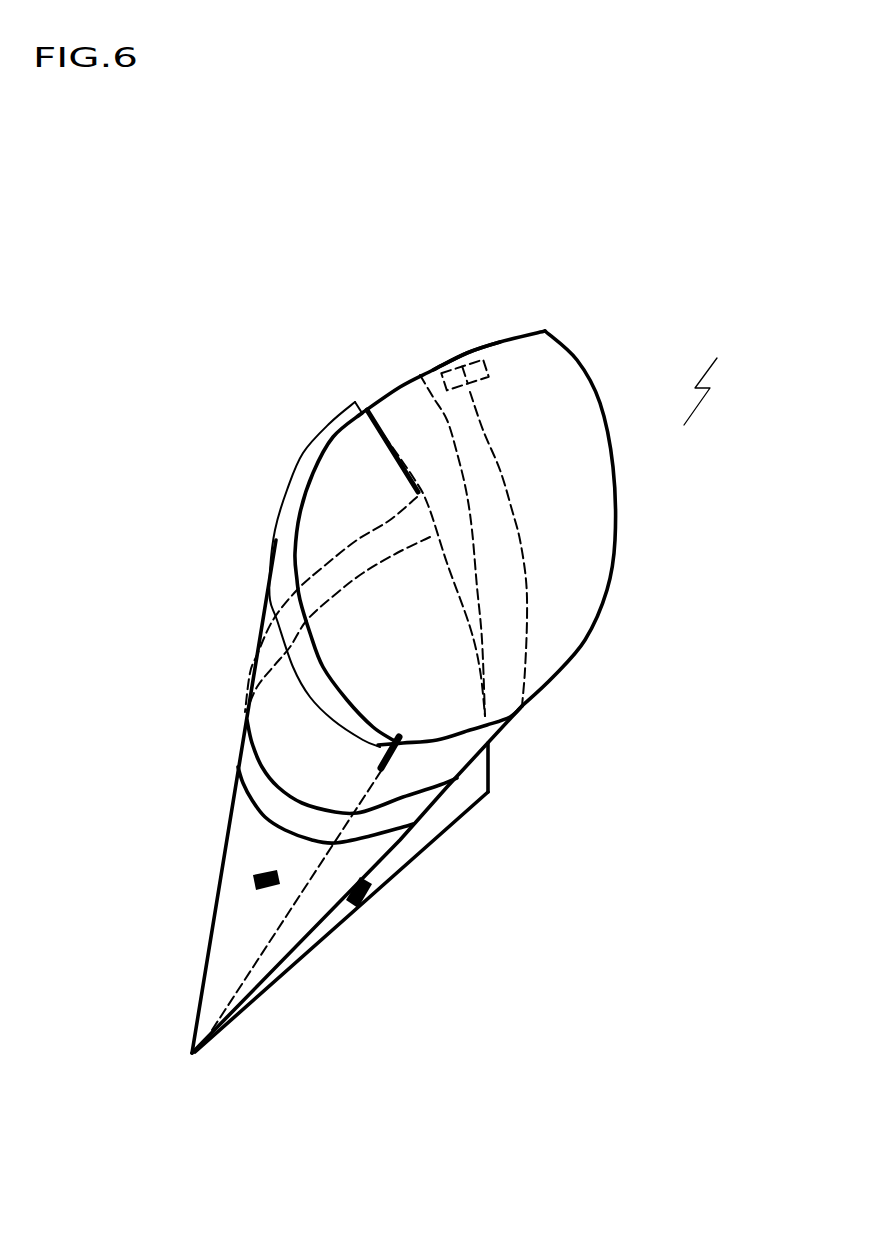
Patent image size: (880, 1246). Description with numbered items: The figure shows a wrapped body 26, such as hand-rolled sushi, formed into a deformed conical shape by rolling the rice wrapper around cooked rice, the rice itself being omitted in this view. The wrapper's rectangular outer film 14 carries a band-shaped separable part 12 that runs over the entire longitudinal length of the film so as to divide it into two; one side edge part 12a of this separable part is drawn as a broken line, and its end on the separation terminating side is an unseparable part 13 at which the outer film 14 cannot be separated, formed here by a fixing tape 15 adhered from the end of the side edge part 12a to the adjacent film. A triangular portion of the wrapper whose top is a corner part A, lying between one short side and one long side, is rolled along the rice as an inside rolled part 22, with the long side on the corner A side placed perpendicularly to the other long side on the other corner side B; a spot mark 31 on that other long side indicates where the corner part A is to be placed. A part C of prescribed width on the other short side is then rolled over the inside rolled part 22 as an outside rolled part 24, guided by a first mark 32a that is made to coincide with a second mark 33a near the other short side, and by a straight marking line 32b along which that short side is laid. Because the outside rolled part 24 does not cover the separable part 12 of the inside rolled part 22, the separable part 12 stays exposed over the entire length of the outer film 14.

The separable part 12 is at (438, 408).
The one side edge part 12a is at (520, 523).
The unseparable part 13 is at (461, 319).
The outer film 14 is at (233, 938).
The fixing tape 15 is at (478, 370).
The inside rolled part 22 is at (330, 680).
The outside rolled part 24 is at (280, 503).
The wrapped body 26 is at (736, 357).
The spot mark 31 is at (393, 752).
The first mark 32a is at (257, 880).
The marking line 32b is at (386, 415).
The second mark 33a is at (364, 906).
The corner part A is at (353, 722).
The other corner side B is at (560, 373).
The part C is at (290, 423).